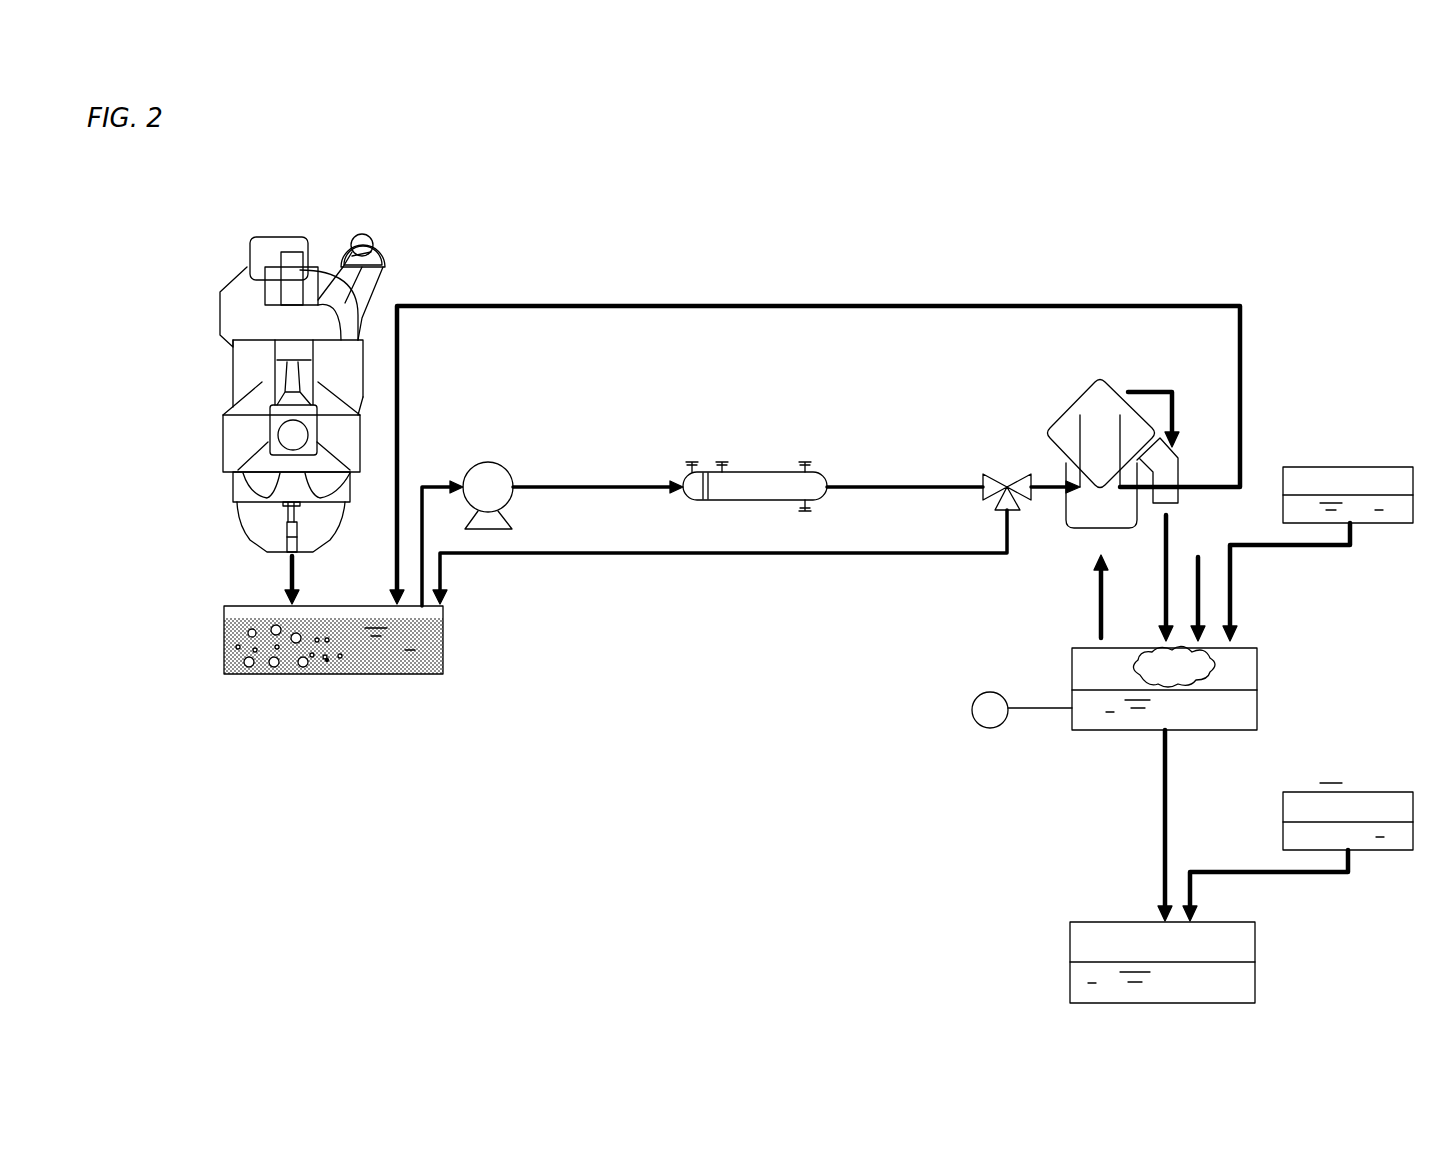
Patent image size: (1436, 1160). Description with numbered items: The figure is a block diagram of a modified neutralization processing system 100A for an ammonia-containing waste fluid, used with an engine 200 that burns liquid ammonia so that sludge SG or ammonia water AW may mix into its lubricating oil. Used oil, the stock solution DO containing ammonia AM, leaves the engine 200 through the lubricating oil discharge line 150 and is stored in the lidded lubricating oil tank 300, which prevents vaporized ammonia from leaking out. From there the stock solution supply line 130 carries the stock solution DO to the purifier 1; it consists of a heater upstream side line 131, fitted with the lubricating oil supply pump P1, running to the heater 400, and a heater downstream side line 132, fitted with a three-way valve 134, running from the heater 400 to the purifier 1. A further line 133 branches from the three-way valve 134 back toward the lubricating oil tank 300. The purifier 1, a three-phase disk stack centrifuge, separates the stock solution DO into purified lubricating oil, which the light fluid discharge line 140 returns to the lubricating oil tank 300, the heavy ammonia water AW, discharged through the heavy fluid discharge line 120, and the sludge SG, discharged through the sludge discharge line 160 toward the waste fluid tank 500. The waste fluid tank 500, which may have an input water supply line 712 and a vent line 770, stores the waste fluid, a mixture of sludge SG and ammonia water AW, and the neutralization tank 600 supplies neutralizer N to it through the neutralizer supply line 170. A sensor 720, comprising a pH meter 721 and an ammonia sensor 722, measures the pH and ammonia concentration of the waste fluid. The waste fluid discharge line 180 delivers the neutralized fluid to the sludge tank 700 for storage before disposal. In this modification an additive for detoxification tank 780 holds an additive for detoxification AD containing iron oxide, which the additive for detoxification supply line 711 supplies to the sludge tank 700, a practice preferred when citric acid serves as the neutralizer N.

The engine 200 is at (218, 236).
The neutralization processing system for an ammonia-containing waste fluid 100A is at (1014, 244).
The light fluid discharge line 140 is at (695, 303).
The lubricating oil discharge line 150 is at (288, 568).
The lubricating oil tank 300 is at (290, 674).
The ammonia water AW is at (248, 633).
The sludge SG is at (327, 662).
The stock solution DO is at (411, 652).
The lubricating oil supply pump P1 is at (491, 462).
The stock solution supply line 130 is at (748, 468).
The heater upstream side line 131 is at (548, 483).
The heater downstream side line 132 is at (862, 483).
The heater 400 is at (755, 470).
The three-way valve 134 is at (1008, 480).
The bypass line 133 is at (684, 553).
The purifier 1 is at (1073, 405).
The heavy fluid discharge line 120 is at (1150, 392).
The sludge discharge line 160 is at (1164, 566).
The input water supply line 712 is at (1198, 577).
The neutralization tank 600 is at (1368, 467).
The neutralizer N is at (1378, 510).
The neutralizer supply line 170 is at (1300, 545).
The vent line 770 is at (1098, 602).
The waste fluid tank 500 is at (1257, 712).
The ammonia AM is at (1210, 660).
The sensor 720 is at (938, 693).
The pH meter 721 is at (938, 693).
The ammonia sensor 722 is at (982, 697).
The waste fluid discharge line 180 is at (1168, 803).
The additive for detoxification tank 780 is at (1362, 792).
The additive for detoxification AD is at (1380, 838).
The additive for detoxification supply line 711 is at (1325, 872).
The sludge tank 700 is at (1257, 975).